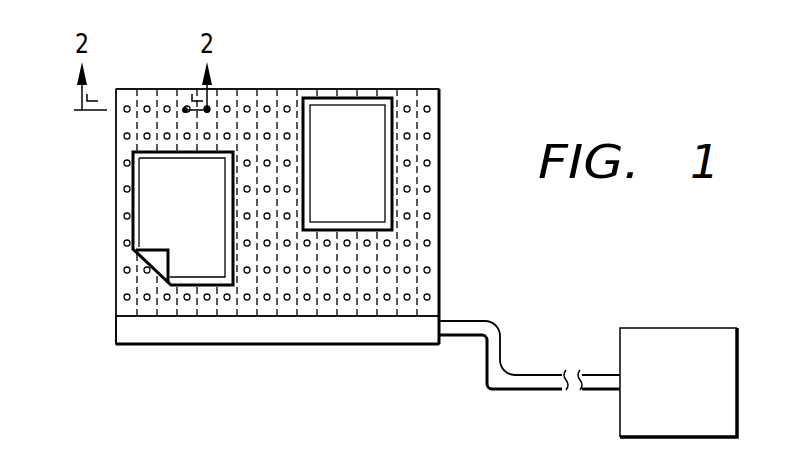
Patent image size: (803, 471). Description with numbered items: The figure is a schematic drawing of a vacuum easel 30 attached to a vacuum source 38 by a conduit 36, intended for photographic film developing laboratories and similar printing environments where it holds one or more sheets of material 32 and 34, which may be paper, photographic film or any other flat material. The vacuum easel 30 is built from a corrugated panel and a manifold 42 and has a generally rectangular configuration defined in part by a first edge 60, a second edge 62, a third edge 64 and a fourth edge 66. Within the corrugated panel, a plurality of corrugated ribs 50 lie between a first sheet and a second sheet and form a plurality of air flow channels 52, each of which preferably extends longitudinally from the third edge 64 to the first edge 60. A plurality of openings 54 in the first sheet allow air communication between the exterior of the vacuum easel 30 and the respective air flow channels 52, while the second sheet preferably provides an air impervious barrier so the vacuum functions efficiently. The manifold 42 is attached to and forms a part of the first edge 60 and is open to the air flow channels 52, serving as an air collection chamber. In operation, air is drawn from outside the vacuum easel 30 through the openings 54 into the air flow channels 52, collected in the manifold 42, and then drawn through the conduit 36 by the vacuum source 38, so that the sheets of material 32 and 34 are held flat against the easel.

The vacuum easel 30 is at (299, 80).
The sheet of material 32 is at (363, 125).
The sheet of material 34 is at (158, 228).
The conduit 36 is at (512, 348).
The vacuum source 38 is at (678, 327).
The manifold 42 is at (250, 346).
The corrugated ribs 50 is at (237, 100).
The air flow channels 52 is at (122, 309).
The openings 54 is at (166, 106).
The first edge 60 is at (398, 330).
The second edge 62 is at (116, 170).
The third edge 64 is at (430, 89).
The fourth edge 66 is at (441, 148).